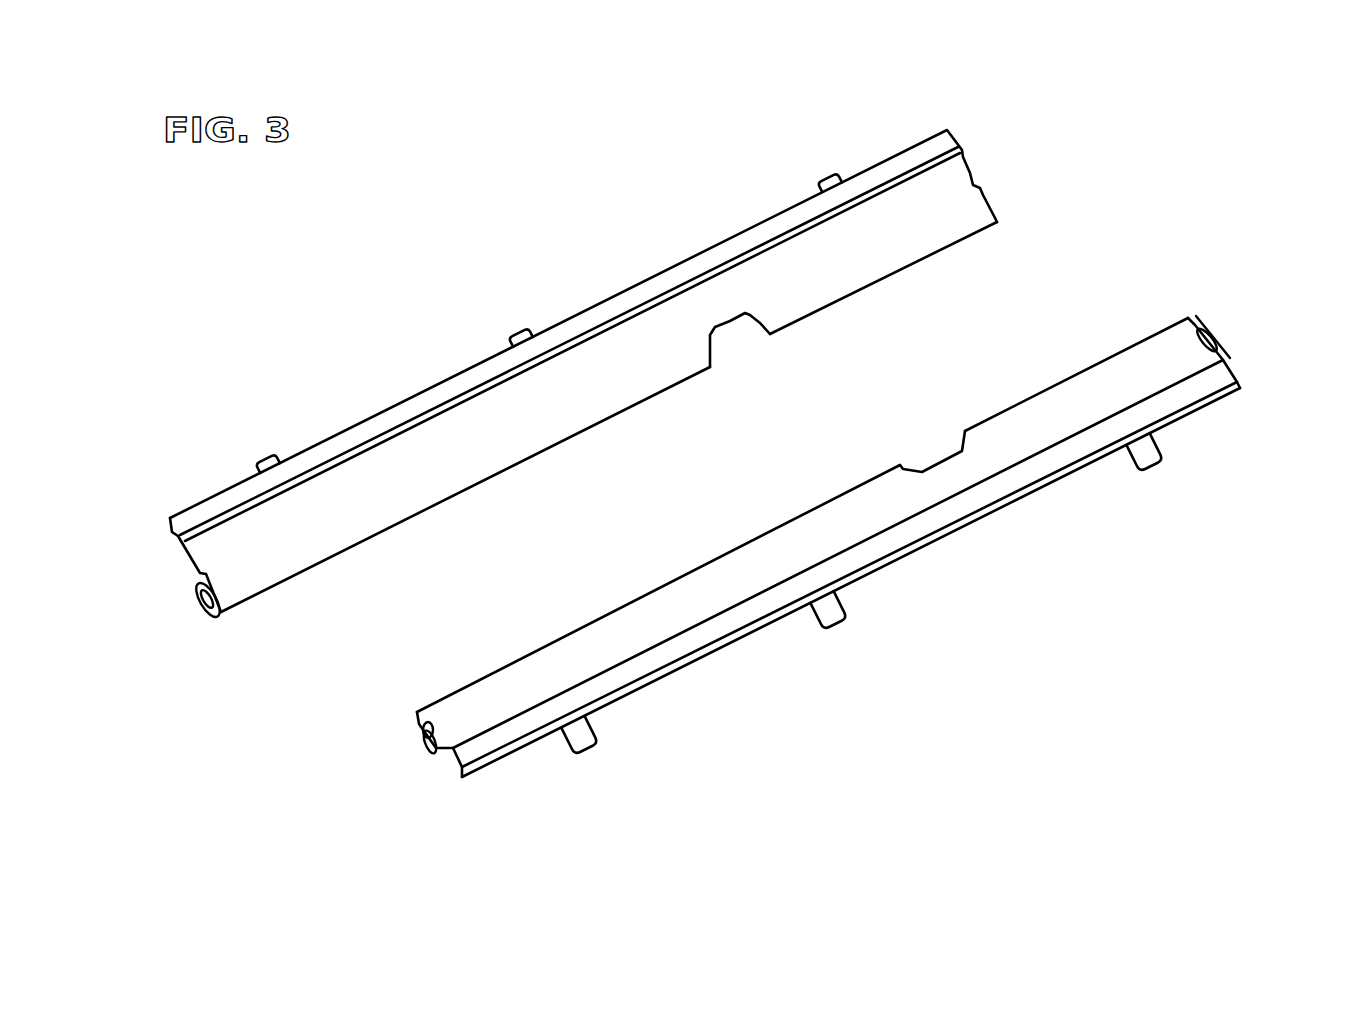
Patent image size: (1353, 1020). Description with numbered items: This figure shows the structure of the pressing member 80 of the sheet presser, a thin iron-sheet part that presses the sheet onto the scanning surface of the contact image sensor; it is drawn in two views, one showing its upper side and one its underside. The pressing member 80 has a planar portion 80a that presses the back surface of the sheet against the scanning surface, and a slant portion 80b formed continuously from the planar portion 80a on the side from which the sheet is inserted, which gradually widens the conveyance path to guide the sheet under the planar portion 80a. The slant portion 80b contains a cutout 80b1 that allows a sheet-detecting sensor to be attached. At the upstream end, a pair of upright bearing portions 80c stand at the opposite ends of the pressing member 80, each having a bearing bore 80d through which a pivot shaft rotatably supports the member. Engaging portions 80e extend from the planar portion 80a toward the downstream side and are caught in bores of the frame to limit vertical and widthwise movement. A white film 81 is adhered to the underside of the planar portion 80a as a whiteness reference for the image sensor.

The pressing member 80 is at (585, 210).
The planar portion 80a is at (433, 387).
The slant portion 80b is at (532, 432).
The cutout 80b1 is at (732, 326).
The bearing portion 80c is at (203, 620).
The bearing bore 80d is at (197, 600).
The engaging portion 80e is at (832, 177).
The white film 81 is at (727, 248).